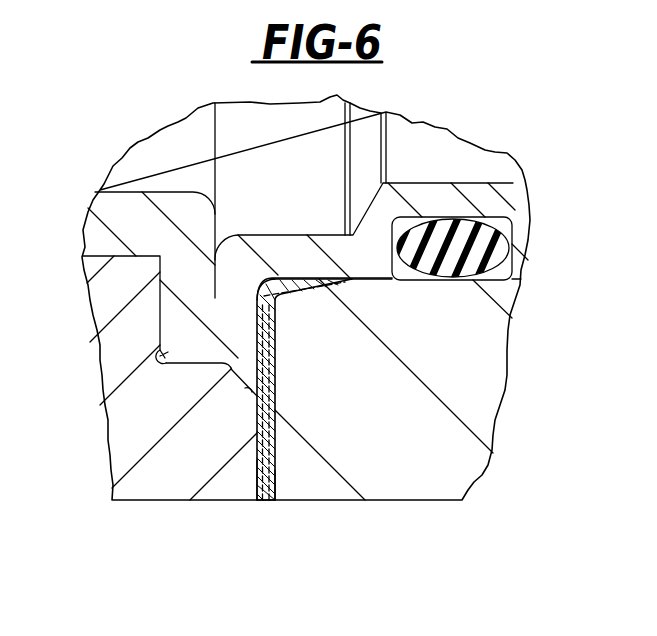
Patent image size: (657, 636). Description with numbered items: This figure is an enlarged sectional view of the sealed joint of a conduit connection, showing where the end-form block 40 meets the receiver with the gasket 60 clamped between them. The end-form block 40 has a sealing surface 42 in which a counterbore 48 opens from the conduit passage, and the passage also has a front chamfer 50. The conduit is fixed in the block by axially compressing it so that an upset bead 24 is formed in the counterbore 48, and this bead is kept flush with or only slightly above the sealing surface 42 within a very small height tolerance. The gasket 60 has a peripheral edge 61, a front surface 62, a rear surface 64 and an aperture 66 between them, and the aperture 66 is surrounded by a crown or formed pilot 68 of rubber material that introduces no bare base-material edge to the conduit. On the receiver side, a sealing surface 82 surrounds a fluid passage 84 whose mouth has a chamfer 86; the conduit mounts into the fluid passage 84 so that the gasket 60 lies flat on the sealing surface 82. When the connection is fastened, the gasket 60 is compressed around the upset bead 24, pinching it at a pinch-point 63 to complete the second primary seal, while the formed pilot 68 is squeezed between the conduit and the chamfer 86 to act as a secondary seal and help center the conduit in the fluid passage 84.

The upset bead 24 is at (160, 358).
The end-form block 40 is at (115, 443).
The sealing surface 42 is at (260, 500).
The counterbore 48 is at (184, 363).
The front chamfer 50 is at (255, 398).
The gasket 60 is at (210, 444).
The peripheral edge 61 is at (266, 500).
The front surface 62 is at (276, 467).
The pinch-point 63 is at (255, 342).
The rear surface 64 is at (256, 464).
The aperture 66 is at (335, 279).
The formed pilot 68 is at (281, 279).
The sealing surface 82 is at (271, 500).
The fluid passage 84 is at (413, 280).
The chamfer 86 is at (312, 288).